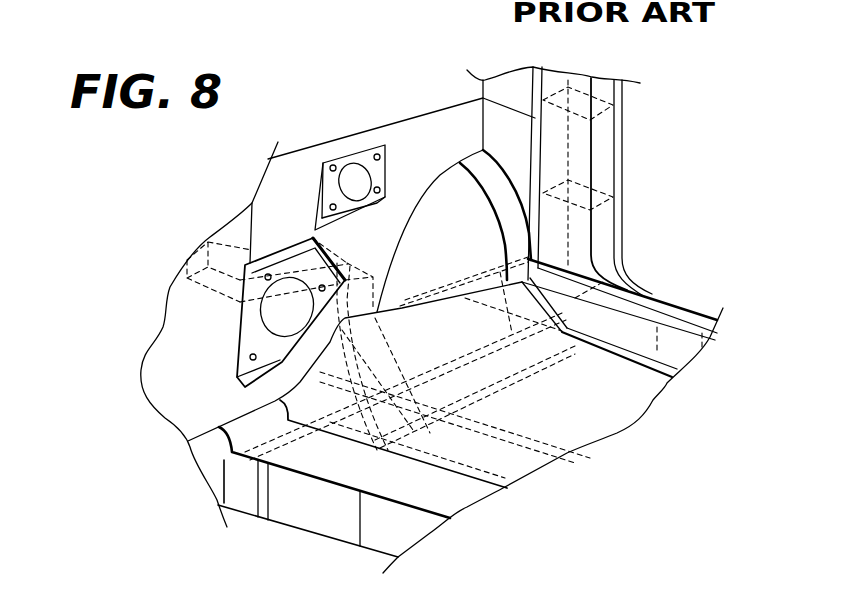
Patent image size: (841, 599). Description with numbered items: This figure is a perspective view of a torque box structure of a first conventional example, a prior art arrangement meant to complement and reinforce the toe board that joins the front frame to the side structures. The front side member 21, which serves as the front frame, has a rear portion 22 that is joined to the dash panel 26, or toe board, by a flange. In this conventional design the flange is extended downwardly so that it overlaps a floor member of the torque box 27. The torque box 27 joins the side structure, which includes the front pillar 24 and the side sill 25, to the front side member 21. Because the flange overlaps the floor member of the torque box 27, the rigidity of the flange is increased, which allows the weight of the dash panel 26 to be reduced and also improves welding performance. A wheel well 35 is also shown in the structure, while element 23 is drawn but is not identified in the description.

The bracket 21 is at (237, 290).
The side sill 22 is at (345, 380).
The side sill inner member 23 is at (497, 493).
The center pillar 24 is at (623, 133).
The rear side member 25 is at (643, 300).
The wheel house side panel 26 is at (283, 202).
The floor panel 27 is at (613, 435).
The wheel house 35 is at (443, 215).